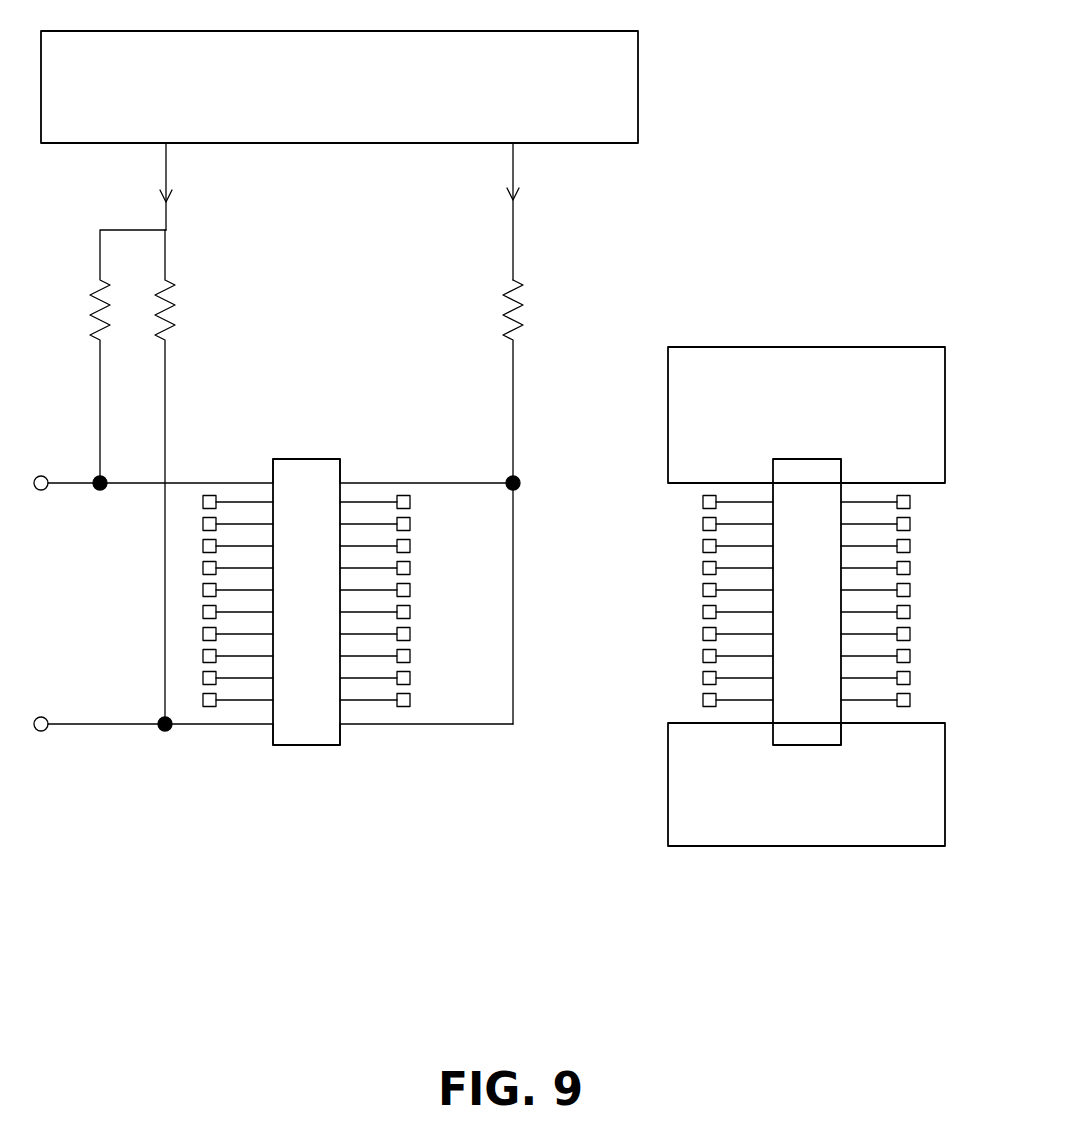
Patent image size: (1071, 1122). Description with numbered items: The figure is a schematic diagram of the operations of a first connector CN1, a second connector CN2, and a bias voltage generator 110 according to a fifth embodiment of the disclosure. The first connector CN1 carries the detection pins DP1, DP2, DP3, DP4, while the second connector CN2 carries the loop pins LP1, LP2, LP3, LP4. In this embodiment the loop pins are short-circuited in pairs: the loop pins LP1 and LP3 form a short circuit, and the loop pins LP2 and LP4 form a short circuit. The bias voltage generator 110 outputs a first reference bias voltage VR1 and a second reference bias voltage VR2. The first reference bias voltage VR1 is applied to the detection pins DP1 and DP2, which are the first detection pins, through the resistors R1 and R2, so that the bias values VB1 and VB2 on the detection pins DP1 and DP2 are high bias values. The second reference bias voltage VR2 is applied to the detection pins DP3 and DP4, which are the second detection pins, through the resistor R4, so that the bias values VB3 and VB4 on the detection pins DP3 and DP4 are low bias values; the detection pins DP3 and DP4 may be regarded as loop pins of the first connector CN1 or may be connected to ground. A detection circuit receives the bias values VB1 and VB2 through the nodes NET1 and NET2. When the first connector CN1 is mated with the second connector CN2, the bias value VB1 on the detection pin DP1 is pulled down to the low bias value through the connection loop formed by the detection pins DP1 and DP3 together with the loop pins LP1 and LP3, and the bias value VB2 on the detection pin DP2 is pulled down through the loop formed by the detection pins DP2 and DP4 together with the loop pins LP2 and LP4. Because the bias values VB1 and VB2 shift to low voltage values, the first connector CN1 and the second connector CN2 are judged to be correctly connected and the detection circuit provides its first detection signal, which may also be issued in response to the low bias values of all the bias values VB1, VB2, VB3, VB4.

The bias voltage generator 110 is at (638, 91).
The first reference bias voltage VR1 is at (196, 186).
The second reference bias voltage VR2 is at (543, 211).
The resistor R1 is at (128, 356).
The resistor R2 is at (185, 477).
The resistor R4 is at (534, 502).
The node NET1 is at (41, 476).
The node NET2 is at (41, 717).
The bias value VB1 is at (104, 502).
The bias value VB2 is at (173, 743).
The bias value VB3 is at (430, 468).
The bias value VB4 is at (426, 746).
The first connector CN1 is at (332, 601).
The second connector CN2 is at (832, 601).
The detection pin DP1 is at (273, 483).
The detection pin DP2 is at (273, 725).
The detection pin DP3 is at (341, 483).
The detection pin DP4 is at (341, 725).
The loop pin LP1 is at (773, 483).
The loop pin LP2 is at (773, 724).
The loop pin LP3 is at (842, 483).
The loop pin LP4 is at (842, 724).